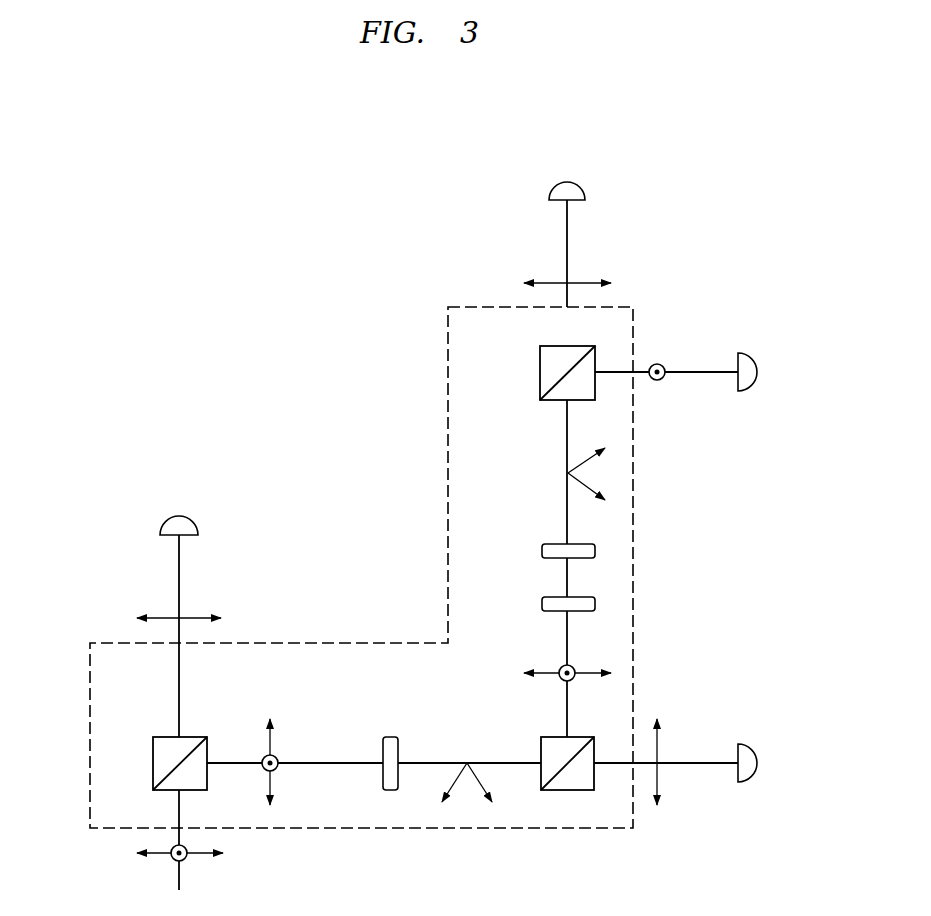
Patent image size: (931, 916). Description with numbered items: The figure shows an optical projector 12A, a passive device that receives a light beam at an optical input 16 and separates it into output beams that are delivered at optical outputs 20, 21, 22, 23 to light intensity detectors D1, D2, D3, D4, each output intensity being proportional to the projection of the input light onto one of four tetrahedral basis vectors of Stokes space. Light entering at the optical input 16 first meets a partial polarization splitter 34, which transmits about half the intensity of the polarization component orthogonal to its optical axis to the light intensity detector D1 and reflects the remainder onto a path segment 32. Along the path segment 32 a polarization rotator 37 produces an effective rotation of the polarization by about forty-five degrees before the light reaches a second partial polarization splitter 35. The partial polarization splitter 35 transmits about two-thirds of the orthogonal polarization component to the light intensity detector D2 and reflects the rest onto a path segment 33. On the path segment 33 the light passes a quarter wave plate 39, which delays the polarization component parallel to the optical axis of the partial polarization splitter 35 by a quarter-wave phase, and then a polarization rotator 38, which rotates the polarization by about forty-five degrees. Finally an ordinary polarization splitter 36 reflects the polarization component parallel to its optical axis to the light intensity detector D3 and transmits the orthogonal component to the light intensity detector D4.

The optical projector 12A is at (448, 512).
The optical input 16 is at (180, 875).
The optical output 20 is at (180, 595).
The optical output 21 is at (680, 763).
The optical output 22 is at (677, 371).
The optical output 23 is at (572, 258).
The path segment 32 is at (342, 763).
The path segment 33 is at (567, 688).
The partial polarization splitter 34 is at (153, 740).
The partial polarization splitter 35 is at (541, 740).
The ordinary polarization splitter 36 is at (540, 395).
The polarization rotator 37 is at (382, 740).
The polarization rotator 38 is at (540, 550).
The quarter wave plate 39 is at (540, 600).
The light intensity detector D1 is at (192, 518).
The light intensity detector D2 is at (757, 752).
The light intensity detector D3 is at (757, 363).
The light intensity detector D4 is at (580, 183).